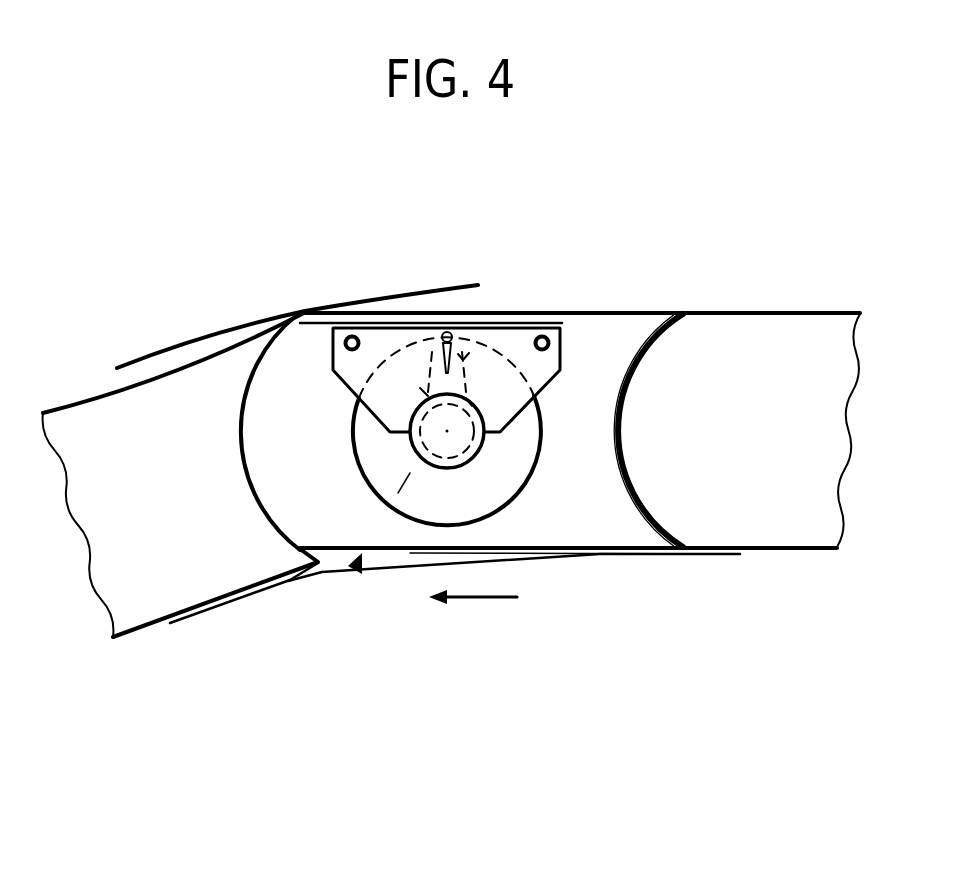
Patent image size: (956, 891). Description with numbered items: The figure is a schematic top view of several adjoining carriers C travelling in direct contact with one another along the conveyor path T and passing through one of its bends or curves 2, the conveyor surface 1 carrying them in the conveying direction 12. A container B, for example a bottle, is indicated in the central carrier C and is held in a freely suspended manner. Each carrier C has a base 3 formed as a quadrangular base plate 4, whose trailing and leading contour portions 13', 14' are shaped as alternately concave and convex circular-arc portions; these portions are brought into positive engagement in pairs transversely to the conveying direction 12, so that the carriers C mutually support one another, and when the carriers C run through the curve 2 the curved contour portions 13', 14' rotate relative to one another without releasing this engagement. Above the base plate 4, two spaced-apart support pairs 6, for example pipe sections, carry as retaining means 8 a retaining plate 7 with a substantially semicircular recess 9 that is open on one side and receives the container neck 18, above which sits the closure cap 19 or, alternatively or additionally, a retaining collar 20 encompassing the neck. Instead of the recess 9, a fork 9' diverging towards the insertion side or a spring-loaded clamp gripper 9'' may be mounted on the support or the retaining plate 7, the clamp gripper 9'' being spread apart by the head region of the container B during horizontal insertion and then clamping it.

The conveyor surface 1 is at (142, 368).
The curve 2 is at (238, 318).
The base 3 is at (350, 578).
The base plate 4 is at (806, 330).
The support pairs 6 is at (539, 334).
The retaining plate 7 is at (373, 335).
The retaining means 8 is at (560, 405).
The recess 9 is at (446, 311).
The fork 9' is at (465, 304).
The clamp gripper 9'' is at (508, 565).
The conveying direction 12 is at (473, 634).
The trailing contour portion 13' is at (495, 432).
The leading contour portion 14' is at (379, 473).
The container neck 18 is at (392, 515).
The closure cap 19 is at (447, 468).
The retaining collar 20 is at (447, 431).
The conveyor path T is at (191, 301).
The carrier C is at (612, 330).
The container B is at (520, 503).